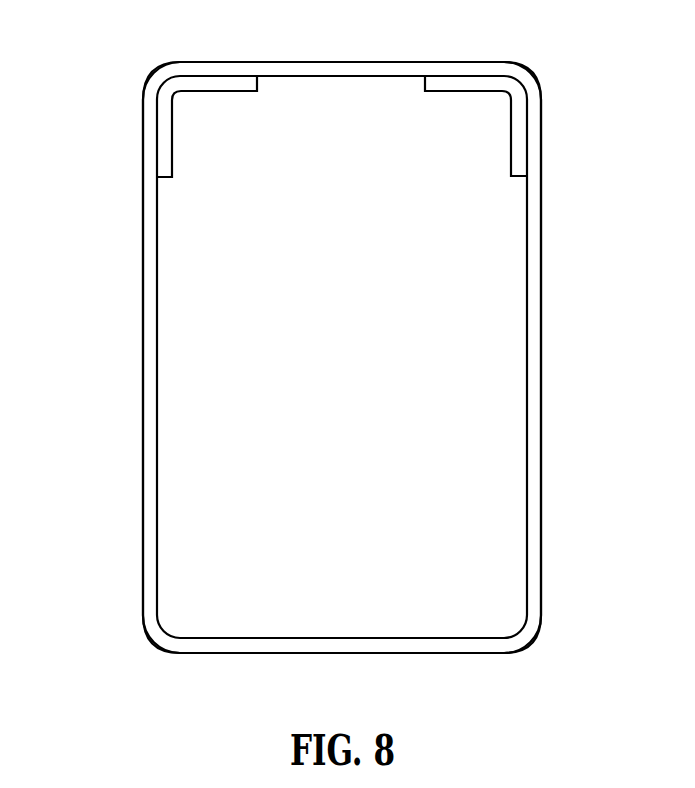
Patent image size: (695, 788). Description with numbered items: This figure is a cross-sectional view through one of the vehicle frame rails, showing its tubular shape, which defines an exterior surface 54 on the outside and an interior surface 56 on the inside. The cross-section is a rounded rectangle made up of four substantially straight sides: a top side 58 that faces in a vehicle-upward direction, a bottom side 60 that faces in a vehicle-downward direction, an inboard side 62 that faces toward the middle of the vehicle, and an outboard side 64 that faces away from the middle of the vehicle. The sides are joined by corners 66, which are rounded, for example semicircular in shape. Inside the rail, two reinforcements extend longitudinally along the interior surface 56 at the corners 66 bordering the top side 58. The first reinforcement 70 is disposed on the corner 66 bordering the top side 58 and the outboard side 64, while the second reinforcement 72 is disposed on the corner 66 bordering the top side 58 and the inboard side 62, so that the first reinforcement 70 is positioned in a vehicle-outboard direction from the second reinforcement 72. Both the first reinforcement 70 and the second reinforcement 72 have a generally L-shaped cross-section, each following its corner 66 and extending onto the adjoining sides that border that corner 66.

The exterior surface 54 is at (541, 240).
The interior surface 56 is at (526, 283).
The top side 58 is at (342, 62).
The bottom side 60 is at (342, 653).
The inboard side 62 is at (541, 358).
The outboard side 64 is at (143, 357).
The corners 66 is at (153, 70).
The first reinforcement 70 is at (217, 91).
The second reinforcement 72 is at (468, 91).